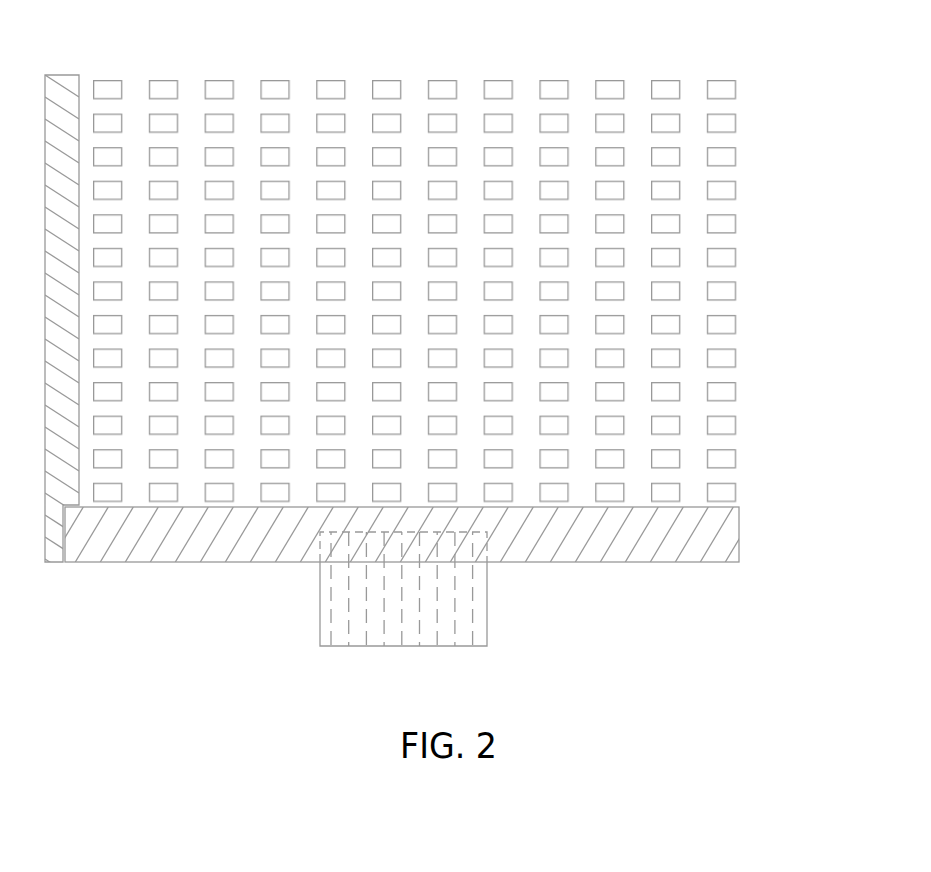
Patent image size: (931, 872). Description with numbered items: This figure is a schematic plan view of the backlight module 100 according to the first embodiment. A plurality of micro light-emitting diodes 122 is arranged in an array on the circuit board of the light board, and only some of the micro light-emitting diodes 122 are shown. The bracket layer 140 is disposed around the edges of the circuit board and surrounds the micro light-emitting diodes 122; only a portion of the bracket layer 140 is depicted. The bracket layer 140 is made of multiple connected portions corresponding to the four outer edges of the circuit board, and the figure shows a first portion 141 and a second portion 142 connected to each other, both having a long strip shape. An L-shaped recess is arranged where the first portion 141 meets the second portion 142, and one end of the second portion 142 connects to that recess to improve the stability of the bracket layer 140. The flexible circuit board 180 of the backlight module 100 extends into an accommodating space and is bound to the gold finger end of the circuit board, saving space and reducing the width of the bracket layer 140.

The backlight module 100 is at (495, 79).
The micro light-emitting diode 122 is at (733, 323).
The bracket layer 140 is at (715, 532).
The first portion 141 is at (55, 557).
The second portion 142 is at (173, 555).
The flexible circuit board 180 is at (480, 617).